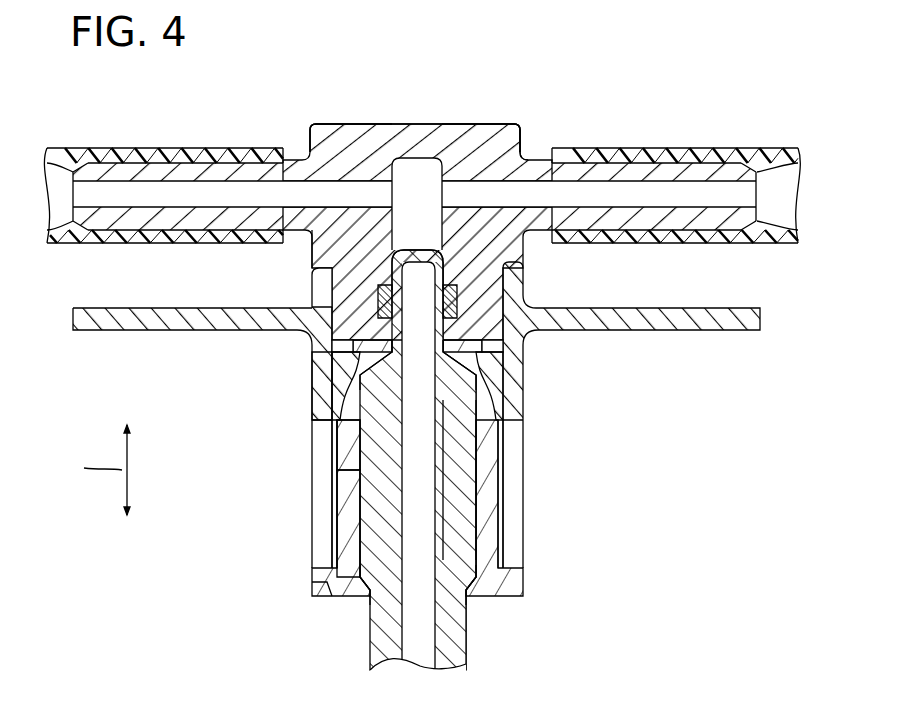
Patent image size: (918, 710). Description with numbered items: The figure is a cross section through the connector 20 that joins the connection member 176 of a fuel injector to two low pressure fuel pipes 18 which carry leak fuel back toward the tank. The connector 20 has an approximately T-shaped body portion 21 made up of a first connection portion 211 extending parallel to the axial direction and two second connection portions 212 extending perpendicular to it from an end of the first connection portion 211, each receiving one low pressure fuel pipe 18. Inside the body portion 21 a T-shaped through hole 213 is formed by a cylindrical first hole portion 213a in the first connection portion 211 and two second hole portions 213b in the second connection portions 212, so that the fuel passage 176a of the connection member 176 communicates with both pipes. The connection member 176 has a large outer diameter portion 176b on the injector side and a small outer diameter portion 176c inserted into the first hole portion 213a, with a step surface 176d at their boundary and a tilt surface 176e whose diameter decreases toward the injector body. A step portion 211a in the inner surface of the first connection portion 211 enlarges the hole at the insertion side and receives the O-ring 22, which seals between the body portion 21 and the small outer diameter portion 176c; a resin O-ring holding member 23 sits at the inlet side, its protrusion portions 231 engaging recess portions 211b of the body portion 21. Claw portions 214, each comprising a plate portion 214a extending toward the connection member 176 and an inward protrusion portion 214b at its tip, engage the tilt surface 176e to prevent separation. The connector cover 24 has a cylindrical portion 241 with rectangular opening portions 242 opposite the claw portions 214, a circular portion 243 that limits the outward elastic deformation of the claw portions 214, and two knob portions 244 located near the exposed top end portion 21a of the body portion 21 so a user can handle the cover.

The connector 20 is at (296, 100).
The low pressure fuel pipe 18 is at (137, 148).
The second connection portion 212 is at (214, 163).
The body portion 21 is at (522, 127).
The top end portion 21a is at (517, 123).
The through hole 213 is at (518, 84).
The first hole portion 213a is at (415, 215).
The second hole portion 213b is at (342, 192).
The first connection portion 211 is at (308, 258).
The step portion 211a is at (520, 302).
The recess portion 211b is at (334, 349).
The O-ring 22 is at (312, 293).
The O-ring holding member 23 is at (315, 395).
The protrusion portion 231 is at (318, 368).
The connector cover 24 is at (311, 414).
The cylindrical portion 241 is at (505, 396).
The opening portion 242 is at (322, 468).
The circular portion 243 is at (288, 583).
The knob portion 244 is at (107, 330).
The claw portion 214 is at (385, 508).
The plate portion 214a is at (345, 490).
The protrusion portion 214b is at (357, 542).
The connection member 176 is at (477, 467).
The fuel passage 176a is at (413, 547).
The large outer diameter portion 176b is at (458, 490).
The small outer diameter portion 176c is at (439, 262).
The step surface 176d is at (474, 332).
The tilt surface 176e is at (483, 596).